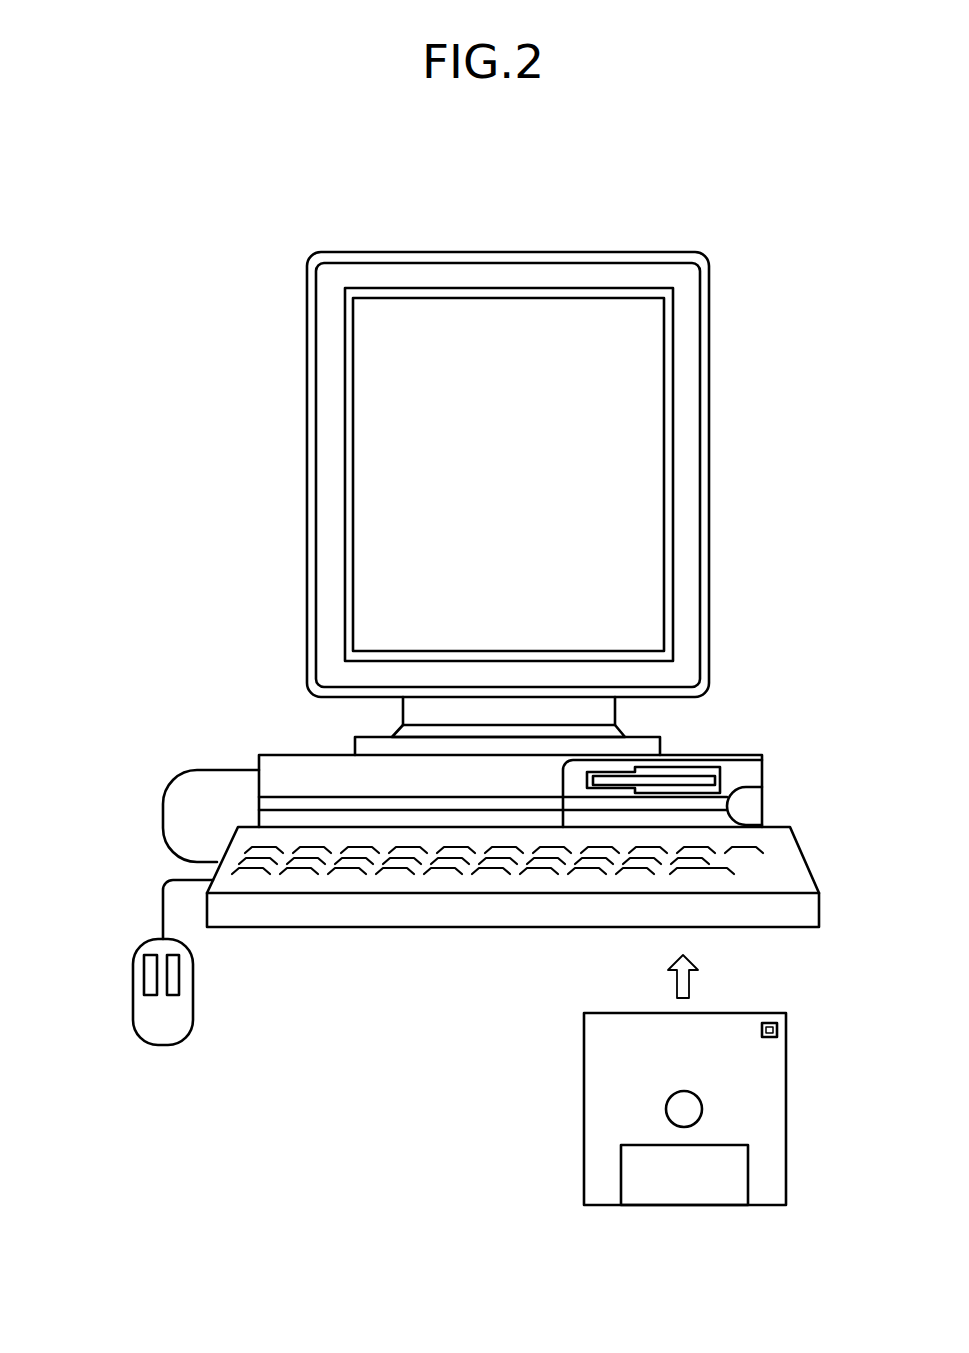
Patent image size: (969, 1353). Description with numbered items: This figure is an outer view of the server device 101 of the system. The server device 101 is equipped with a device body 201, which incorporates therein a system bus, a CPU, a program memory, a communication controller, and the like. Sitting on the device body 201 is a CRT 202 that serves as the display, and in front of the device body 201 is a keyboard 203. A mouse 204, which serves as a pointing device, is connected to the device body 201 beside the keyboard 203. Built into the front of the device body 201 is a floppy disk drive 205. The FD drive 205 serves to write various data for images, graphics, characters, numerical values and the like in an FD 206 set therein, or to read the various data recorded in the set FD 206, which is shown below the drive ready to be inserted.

The server device 101 is at (712, 212).
The device body 201 is at (283, 754).
The CRT 202 is at (307, 488).
The keyboard 203 is at (805, 852).
The mouse 204 is at (133, 988).
The floppy disk drive 205 is at (722, 778).
The FD 206 is at (786, 1093).